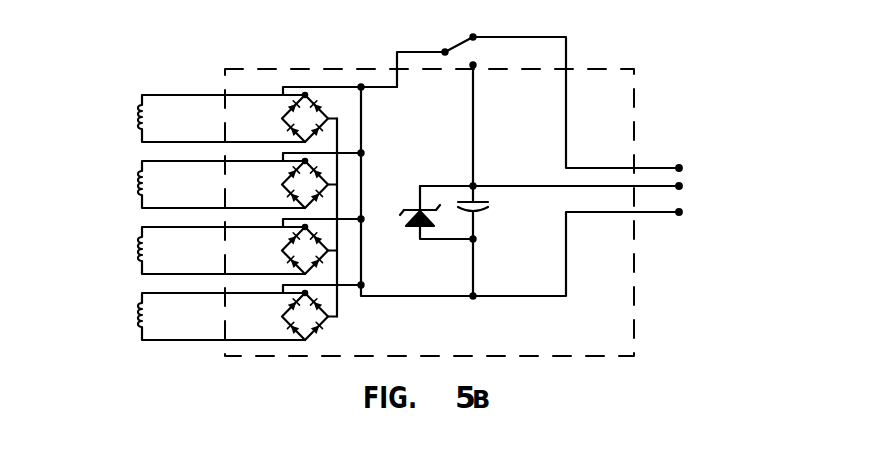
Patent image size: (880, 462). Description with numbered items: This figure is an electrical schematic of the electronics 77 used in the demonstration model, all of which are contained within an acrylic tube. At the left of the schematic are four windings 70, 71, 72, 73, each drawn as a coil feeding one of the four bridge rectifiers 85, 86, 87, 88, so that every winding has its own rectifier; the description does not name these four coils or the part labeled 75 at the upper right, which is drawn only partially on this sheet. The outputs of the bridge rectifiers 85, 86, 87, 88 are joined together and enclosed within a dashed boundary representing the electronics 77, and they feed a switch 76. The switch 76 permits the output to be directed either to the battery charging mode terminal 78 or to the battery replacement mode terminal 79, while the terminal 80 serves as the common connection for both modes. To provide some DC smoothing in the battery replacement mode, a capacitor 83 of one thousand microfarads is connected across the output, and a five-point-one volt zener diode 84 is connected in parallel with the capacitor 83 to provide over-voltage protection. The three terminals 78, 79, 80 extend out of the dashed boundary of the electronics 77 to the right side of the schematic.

The first generator coil 70 is at (139, 108).
The second generator coil 71 is at (139, 182).
The third generator coil 72 is at (139, 242).
The fourth generator coil 73 is at (139, 308).
The generator 75 is at (636, 84).
The switch 76 is at (467, 46).
The electronics 77 is at (258, 67).
The battery charging mode terminal 78 is at (679, 166).
The battery replacement mode terminal 79 is at (681, 187).
The terminal 80 is at (679, 214).
The capacitor 83 is at (478, 200).
The zener diode 84 is at (433, 227).
The bridge rectifier 85 is at (322, 114).
The bridge rectifier 86 is at (326, 184).
The bridge rectifier 87 is at (323, 255).
The bridge rectifier 88 is at (323, 322).